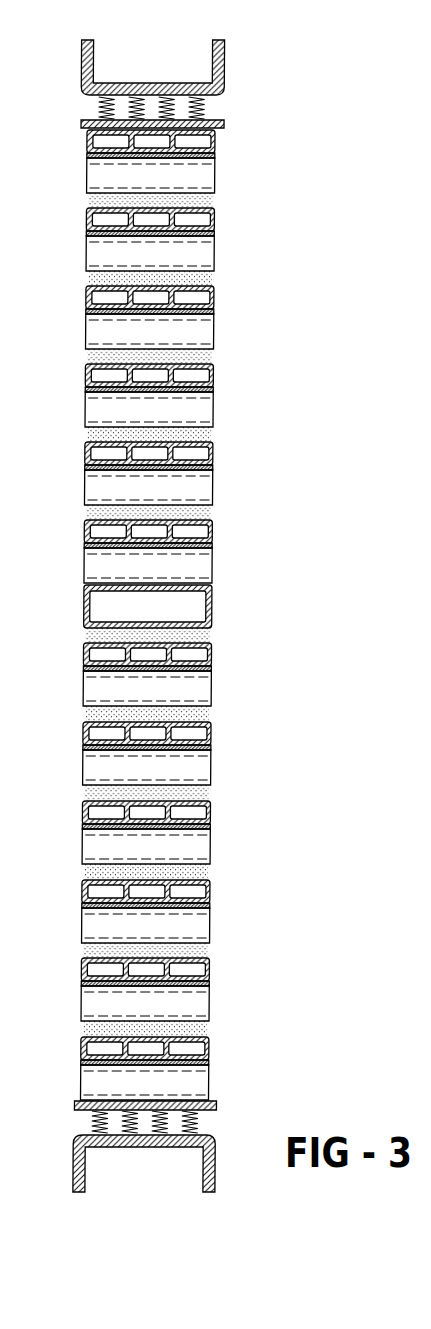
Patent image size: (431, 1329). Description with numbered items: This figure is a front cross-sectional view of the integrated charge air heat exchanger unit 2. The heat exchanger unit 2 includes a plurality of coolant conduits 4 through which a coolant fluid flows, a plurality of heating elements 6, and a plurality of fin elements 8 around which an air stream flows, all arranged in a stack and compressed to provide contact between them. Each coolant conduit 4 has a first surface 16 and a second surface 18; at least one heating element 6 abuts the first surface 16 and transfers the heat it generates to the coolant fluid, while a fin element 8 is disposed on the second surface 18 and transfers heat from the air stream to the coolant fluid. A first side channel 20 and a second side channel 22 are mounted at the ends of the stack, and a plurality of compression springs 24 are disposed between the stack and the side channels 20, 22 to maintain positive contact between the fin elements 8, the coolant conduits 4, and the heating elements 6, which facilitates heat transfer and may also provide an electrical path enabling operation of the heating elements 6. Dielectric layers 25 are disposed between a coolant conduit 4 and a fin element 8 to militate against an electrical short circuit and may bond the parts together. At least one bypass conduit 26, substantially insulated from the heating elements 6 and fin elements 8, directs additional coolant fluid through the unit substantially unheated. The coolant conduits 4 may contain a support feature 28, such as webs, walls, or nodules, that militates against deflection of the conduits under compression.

The integrated charge air heat exchanger unit 2 is at (169, 615).
The coolant conduit 4 is at (87, 220).
The heating element 6 is at (88, 433).
The fin element 8 is at (208, 333).
The first surface 16 is at (193, 203).
The second surface 18 is at (193, 236).
The first side channel 20 is at (108, 83).
The second side channel 22 is at (107, 1145).
The compression spring 24 is at (210, 100).
The dielectric layer 25 is at (213, 310).
The bypass conduit 26 is at (213, 607).
The support feature 28 is at (120, 375).